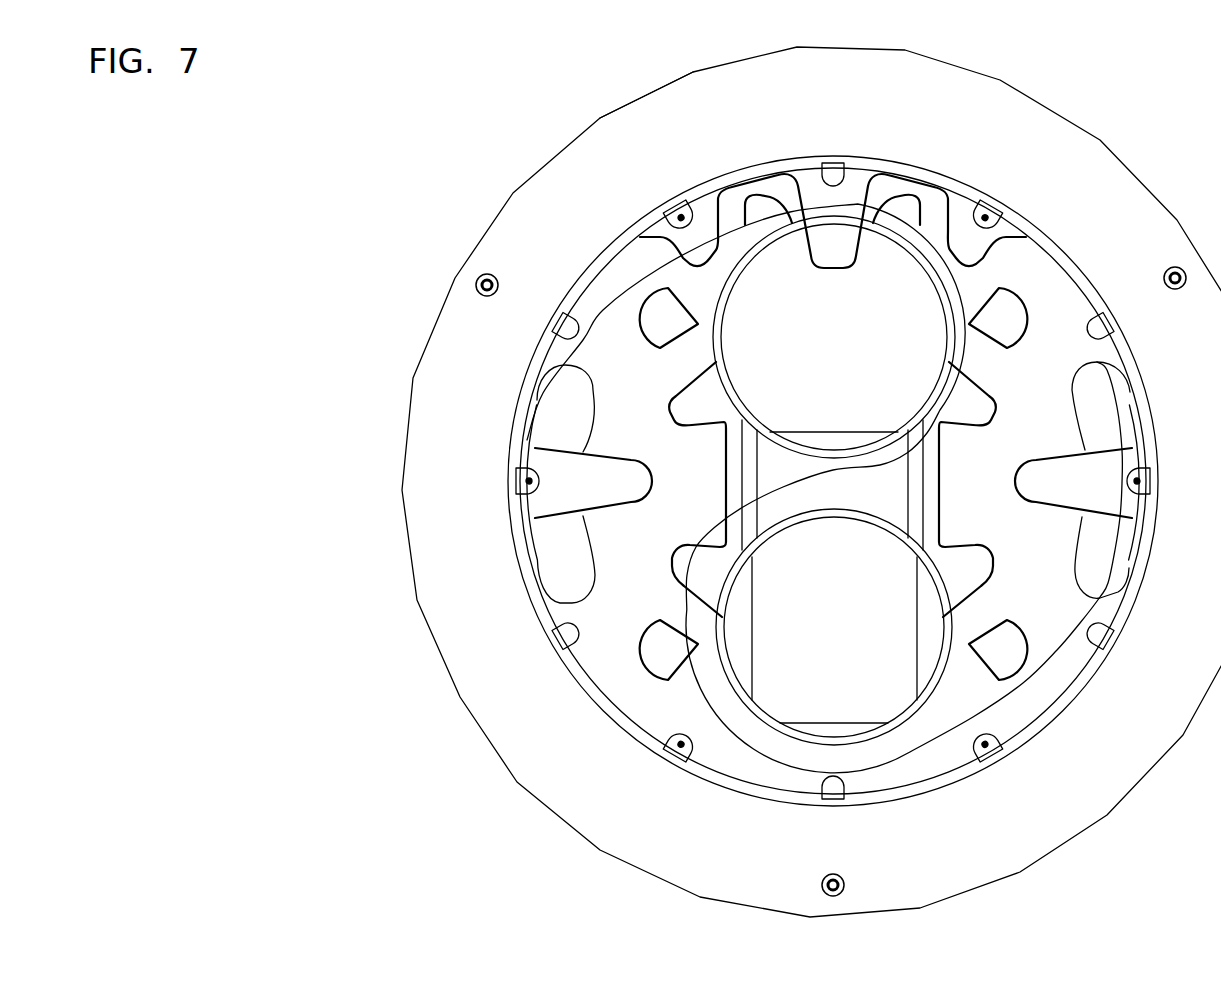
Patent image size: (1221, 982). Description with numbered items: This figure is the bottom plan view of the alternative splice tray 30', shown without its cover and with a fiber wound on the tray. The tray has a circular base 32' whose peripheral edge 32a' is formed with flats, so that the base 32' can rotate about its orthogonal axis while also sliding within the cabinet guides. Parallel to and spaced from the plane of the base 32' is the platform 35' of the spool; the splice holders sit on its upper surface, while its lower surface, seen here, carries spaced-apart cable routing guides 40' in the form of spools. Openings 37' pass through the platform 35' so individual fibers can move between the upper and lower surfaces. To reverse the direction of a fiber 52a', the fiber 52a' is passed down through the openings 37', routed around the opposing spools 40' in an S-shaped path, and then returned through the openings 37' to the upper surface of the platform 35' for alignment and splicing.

The splice tray 30' is at (731, 482).
The circular base 32' is at (811, 482).
The peripheral edge 32a' is at (646, 83).
The platform 35' is at (833, 481).
The openings 37' is at (833, 504).
The cable routing guides 40' is at (834, 480).
The fiber 52a' is at (824, 488).